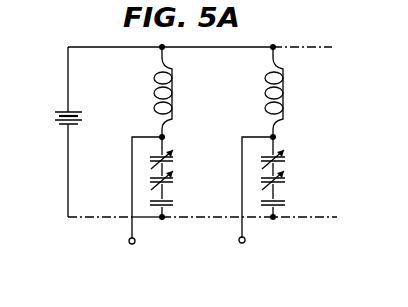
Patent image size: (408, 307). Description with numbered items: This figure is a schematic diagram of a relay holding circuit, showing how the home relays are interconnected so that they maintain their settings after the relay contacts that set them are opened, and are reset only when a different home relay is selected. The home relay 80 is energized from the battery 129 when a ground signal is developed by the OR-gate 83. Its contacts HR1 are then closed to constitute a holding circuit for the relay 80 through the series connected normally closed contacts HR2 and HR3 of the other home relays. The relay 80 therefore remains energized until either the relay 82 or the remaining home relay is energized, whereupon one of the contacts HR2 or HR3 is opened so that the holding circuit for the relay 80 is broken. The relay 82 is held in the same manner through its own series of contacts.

The battery 129 is at (59, 121).
The home relay 80 is at (175, 100).
The home relay 82 is at (284, 100).
The contacts HR-1 HR1 is at (237, 180).
The contacts HR-2 HR2 is at (237, 180).
The contacts HR-3 HR3 is at (237, 180).
The OR-gate 83 is at (135, 264).